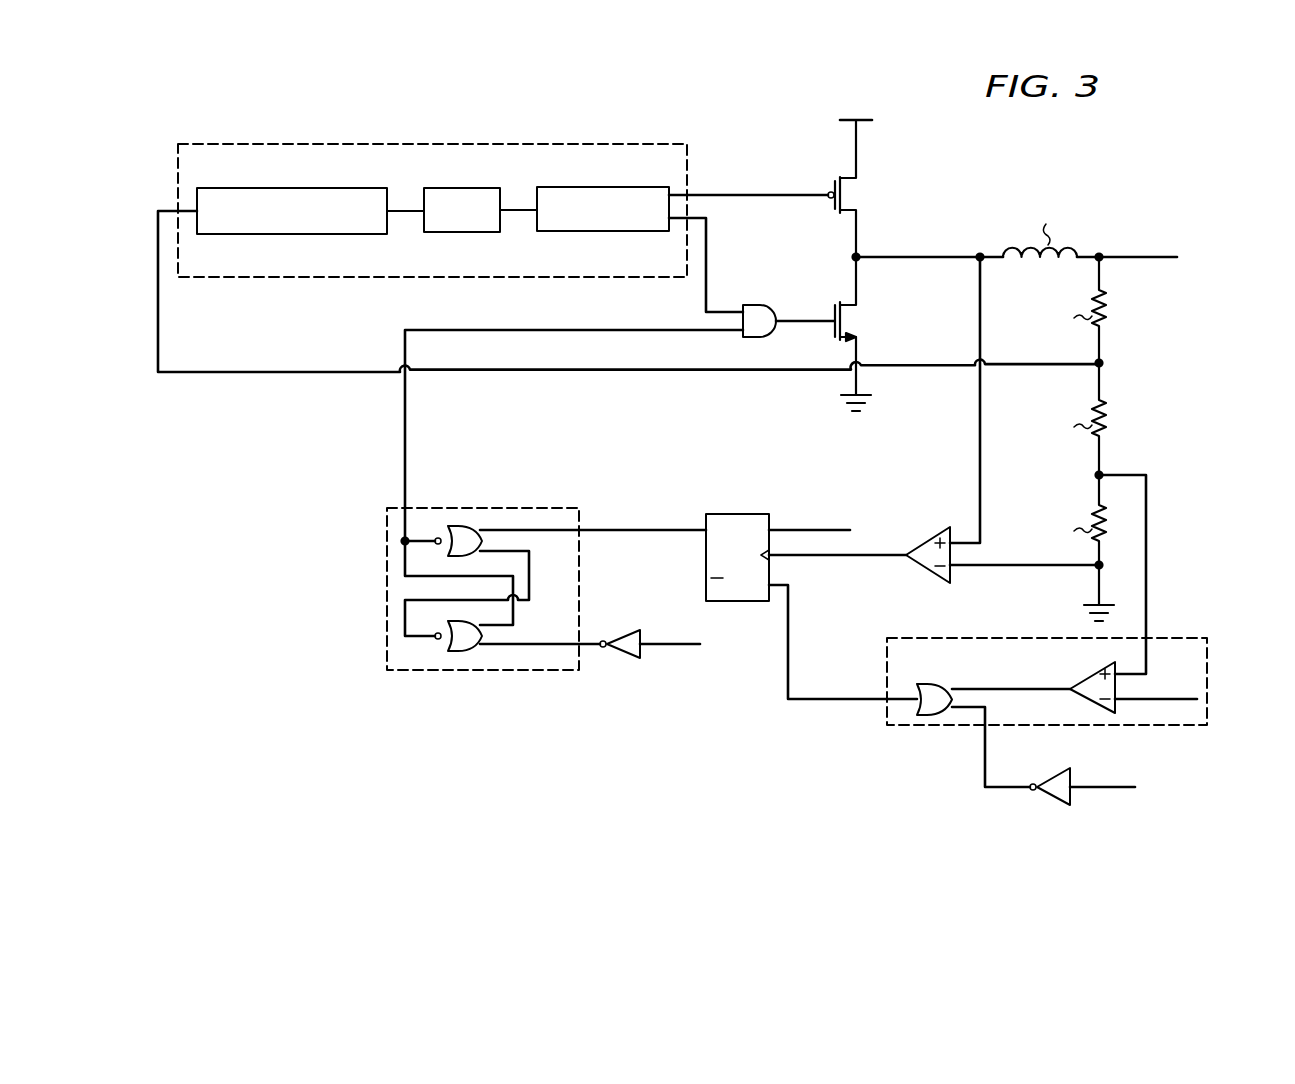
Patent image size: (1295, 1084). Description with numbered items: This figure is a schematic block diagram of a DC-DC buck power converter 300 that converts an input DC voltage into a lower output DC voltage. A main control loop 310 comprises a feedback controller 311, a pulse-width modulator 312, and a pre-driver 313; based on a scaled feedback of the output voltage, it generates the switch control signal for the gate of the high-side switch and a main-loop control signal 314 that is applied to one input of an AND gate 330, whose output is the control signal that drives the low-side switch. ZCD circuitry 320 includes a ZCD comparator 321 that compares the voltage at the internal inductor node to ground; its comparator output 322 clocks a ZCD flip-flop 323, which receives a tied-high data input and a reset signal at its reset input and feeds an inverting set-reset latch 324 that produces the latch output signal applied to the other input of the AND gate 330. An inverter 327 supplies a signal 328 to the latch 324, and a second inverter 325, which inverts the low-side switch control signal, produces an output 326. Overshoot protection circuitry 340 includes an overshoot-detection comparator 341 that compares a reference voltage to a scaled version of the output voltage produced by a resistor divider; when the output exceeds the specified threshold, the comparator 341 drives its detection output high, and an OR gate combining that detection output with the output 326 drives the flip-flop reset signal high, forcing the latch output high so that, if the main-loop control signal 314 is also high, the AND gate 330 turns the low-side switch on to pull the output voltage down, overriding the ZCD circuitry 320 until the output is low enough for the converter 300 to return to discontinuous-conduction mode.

The DC-DC buck power converter 300 is at (1059, 132).
The main control loop 310 is at (640, 143).
The feedback controller 311 is at (328, 188).
The pulse-width modulator 312 is at (447, 188).
The pre-driver 313 is at (616, 188).
The main-loop control signal 314 is at (709, 244).
The ZCD circuitry 320 is at (376, 460).
The ZCD comparator 321 is at (933, 535).
The ZCD comparator output 322 is at (838, 558).
The ZCD flip-flop 323 is at (740, 512).
The inverting ZCD set-reset latch 324 is at (521, 508).
The NCTRL inverter 325 is at (1058, 775).
The inverter output 326 is at (983, 760).
The inverter 327 is at (621, 628).
The latch output line 328 is at (524, 644).
The AND gate 330 is at (760, 303).
The overshoot protection circuitry 340 is at (1170, 638).
The overshoot-detection comparator 341 is at (1097, 671).